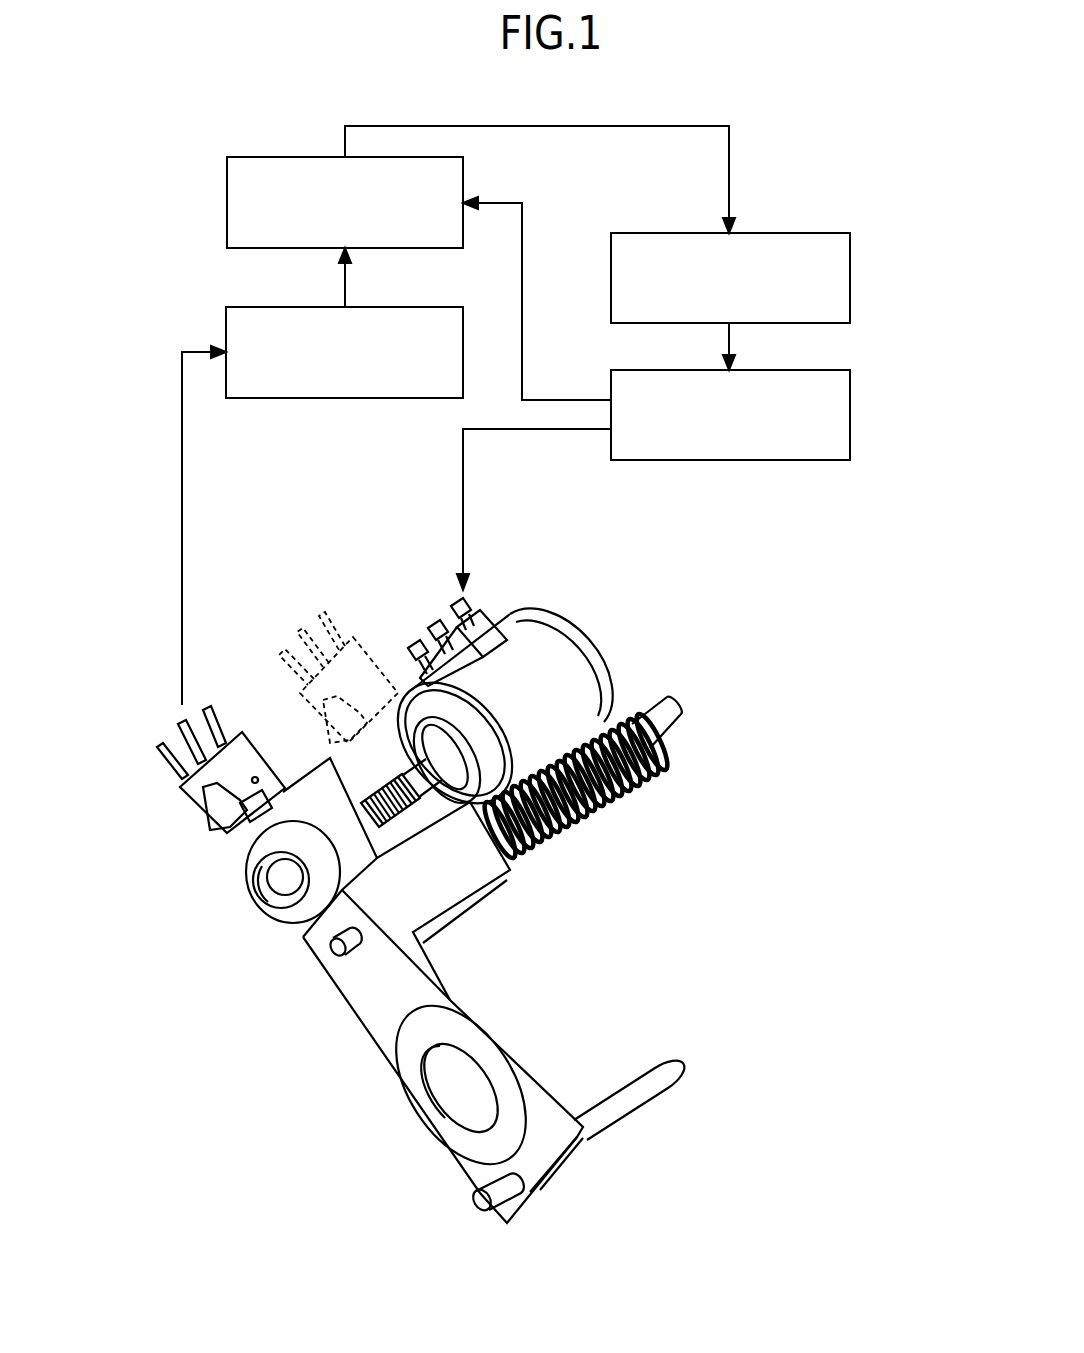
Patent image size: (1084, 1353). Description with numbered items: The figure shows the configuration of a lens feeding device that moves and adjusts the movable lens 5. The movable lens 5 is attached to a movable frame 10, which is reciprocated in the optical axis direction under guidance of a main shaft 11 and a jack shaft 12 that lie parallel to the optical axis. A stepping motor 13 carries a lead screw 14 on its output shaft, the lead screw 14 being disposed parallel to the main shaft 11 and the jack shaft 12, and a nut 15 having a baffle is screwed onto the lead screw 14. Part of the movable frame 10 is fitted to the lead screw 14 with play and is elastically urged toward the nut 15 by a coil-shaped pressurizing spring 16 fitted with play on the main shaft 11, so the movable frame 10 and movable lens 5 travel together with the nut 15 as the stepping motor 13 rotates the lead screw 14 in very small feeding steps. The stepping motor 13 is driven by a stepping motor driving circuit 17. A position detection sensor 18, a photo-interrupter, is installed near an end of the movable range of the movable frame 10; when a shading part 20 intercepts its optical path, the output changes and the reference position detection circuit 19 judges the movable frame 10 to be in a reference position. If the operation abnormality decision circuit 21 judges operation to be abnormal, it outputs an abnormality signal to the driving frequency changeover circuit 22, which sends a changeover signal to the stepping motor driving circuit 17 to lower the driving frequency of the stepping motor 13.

The movable lens 5 is at (460, 1085).
The movable frame 10 is at (363, 980).
The main shaft 11 is at (665, 720).
The jack shaft 12 is at (645, 1097).
The stepping motor 13 is at (567, 658).
The lead screw 14 is at (420, 837).
The nut 15 is at (250, 832).
The pressurizing spring 16 is at (606, 815).
The stepping motor driving circuit 17 is at (851, 411).
The position detection sensor 18 is at (195, 770).
The reference position detection circuit 19 is at (344, 398).
The shading part 20 is at (277, 820).
The operation abnormality decision circuit 21 is at (227, 201).
The driving frequency changeover circuit 22 is at (851, 276).